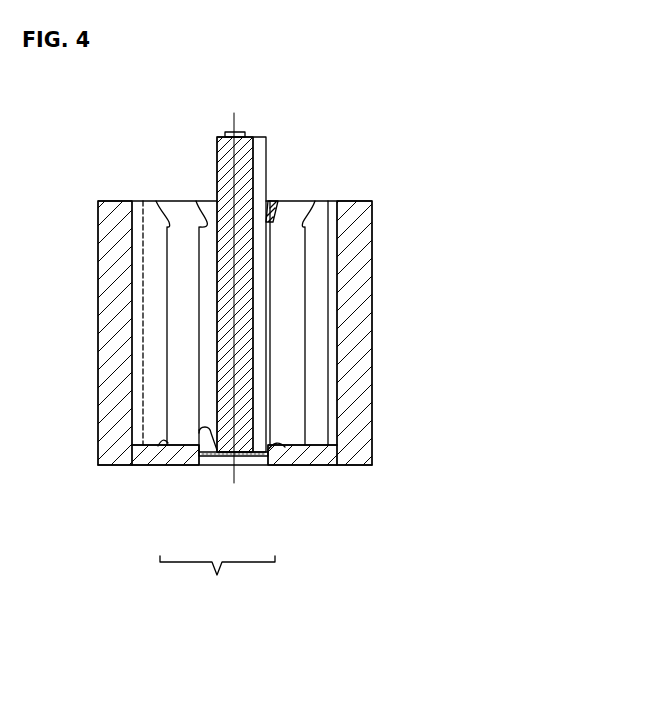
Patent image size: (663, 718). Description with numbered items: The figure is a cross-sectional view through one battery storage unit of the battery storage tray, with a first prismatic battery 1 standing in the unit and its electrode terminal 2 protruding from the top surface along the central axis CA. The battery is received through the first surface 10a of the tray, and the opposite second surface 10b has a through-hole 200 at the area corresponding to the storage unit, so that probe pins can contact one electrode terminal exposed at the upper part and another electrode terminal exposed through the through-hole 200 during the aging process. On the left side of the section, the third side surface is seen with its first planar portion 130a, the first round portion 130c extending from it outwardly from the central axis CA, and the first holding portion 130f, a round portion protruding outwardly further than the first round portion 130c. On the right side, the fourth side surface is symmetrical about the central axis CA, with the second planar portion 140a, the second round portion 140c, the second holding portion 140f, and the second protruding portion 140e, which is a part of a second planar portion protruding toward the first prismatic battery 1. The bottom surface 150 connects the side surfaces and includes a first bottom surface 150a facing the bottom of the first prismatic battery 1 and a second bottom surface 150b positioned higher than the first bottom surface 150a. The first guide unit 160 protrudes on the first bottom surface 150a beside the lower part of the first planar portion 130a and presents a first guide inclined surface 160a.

The first prismatic battery 1 is at (216, 150).
The electrode terminal 2 is at (221, 131).
The central axis CA is at (235, 286).
The first surface 10a is at (358, 199).
The second surface 10b is at (351, 467).
The first planar portion 130a is at (207, 223).
The first round portion 130c is at (168, 223).
The first holding portion 130f is at (143, 258).
The second planar portion 140a is at (264, 298).
The second round portion 140c is at (300, 223).
The second protruding portion 140e is at (262, 222).
The second holding portion 140f is at (322, 252).
The bottom surface 150 is at (217, 578).
The first bottom surface 150a is at (280, 448).
The second bottom surface 150b is at (164, 441).
The first guide unit 160 is at (210, 453).
The first guide inclined surface 160a is at (198, 432).
The through-hole 200 is at (248, 462).